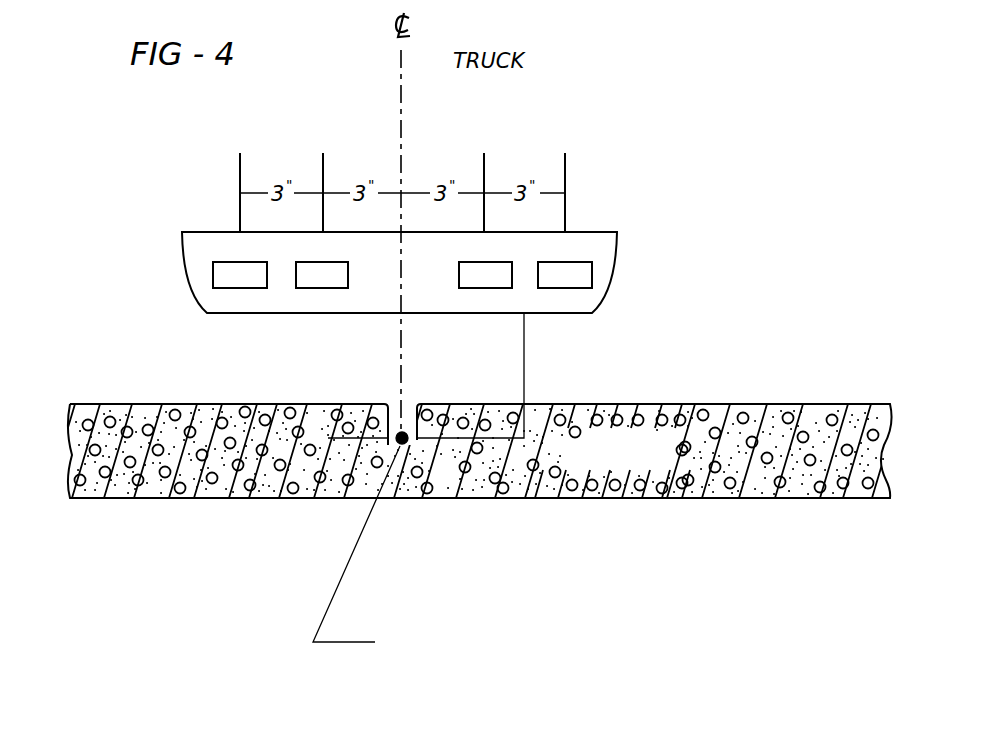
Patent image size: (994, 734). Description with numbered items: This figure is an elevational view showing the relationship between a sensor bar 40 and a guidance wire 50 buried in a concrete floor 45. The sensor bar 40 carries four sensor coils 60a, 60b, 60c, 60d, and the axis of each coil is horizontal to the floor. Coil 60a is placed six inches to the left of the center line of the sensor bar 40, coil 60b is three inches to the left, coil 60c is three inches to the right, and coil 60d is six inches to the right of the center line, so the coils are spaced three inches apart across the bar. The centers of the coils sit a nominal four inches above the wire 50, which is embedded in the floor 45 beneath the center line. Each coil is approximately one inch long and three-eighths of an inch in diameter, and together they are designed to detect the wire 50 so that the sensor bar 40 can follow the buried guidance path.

The sensor bar 40 is at (195, 272).
The sensor coil 60a is at (250, 288).
The sensor coil 60b is at (332, 288).
The sensor coil 60c is at (492, 288).
The sensor coil 60d is at (573, 288).
The wire 50 is at (407, 444).
The floor 45 is at (783, 498).